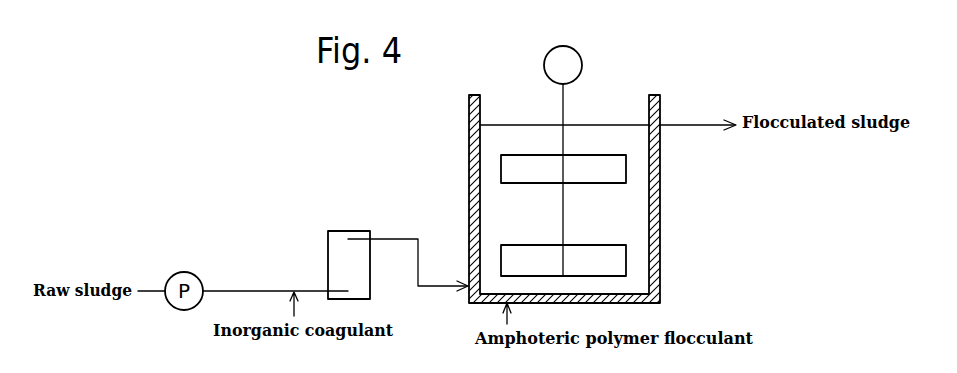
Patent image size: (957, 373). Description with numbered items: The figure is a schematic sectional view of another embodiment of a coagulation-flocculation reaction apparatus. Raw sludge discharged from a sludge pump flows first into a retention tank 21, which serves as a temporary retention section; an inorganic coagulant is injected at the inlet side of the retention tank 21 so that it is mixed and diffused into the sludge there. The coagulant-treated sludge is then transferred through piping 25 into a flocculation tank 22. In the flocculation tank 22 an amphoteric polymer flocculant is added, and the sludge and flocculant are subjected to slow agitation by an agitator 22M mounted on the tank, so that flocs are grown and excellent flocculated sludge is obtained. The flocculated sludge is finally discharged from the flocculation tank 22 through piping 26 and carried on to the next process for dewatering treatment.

The retention tank 21 is at (328, 246).
The flocculation tank 22 is at (661, 220).
The agitator 22M is at (577, 51).
The piping 25 is at (421, 288).
The piping 26 is at (693, 124).